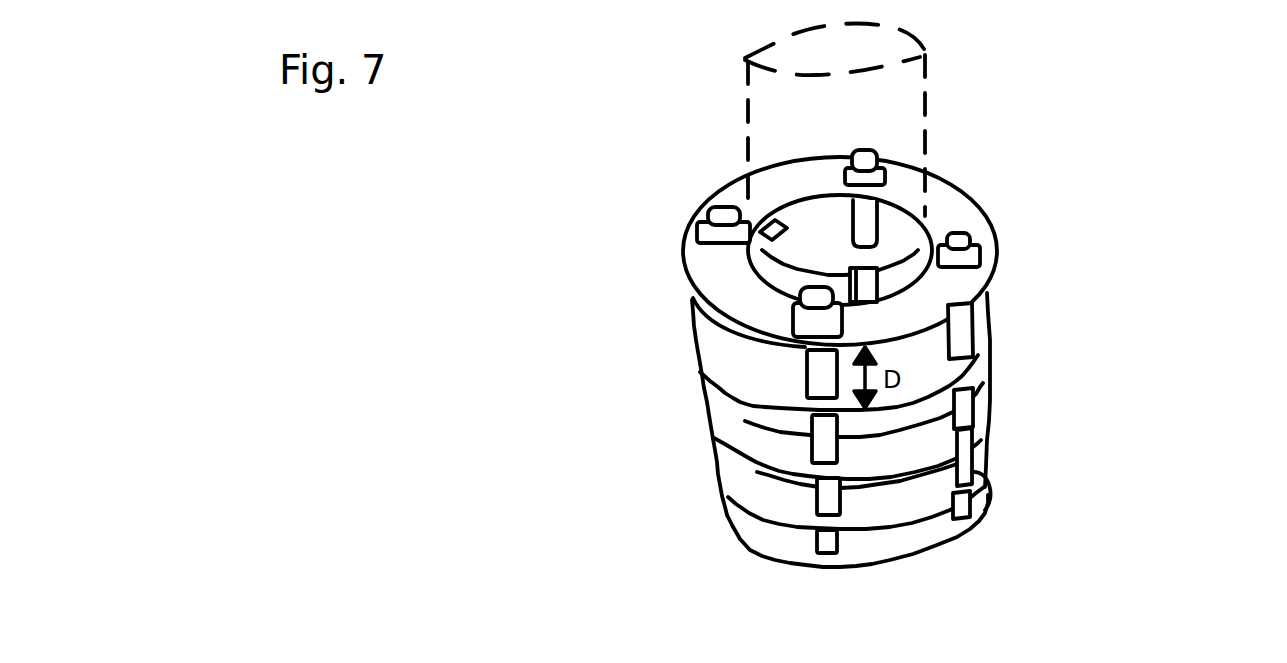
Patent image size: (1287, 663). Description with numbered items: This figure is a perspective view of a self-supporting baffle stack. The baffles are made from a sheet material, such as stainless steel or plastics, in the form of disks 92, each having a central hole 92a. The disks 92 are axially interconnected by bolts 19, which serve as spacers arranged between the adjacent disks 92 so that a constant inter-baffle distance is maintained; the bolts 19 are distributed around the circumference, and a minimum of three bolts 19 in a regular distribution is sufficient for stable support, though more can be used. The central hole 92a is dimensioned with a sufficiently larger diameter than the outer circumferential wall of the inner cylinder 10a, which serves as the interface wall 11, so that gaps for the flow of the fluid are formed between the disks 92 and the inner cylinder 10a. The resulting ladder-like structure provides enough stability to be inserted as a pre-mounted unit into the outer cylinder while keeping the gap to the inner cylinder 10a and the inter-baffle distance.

The inner cylinder 10a is at (1015, 120).
The interface wall 11 is at (928, 128).
The disks 92 is at (931, 290).
The central hole 92a is at (830, 250).
The bolts 19 is at (820, 370).